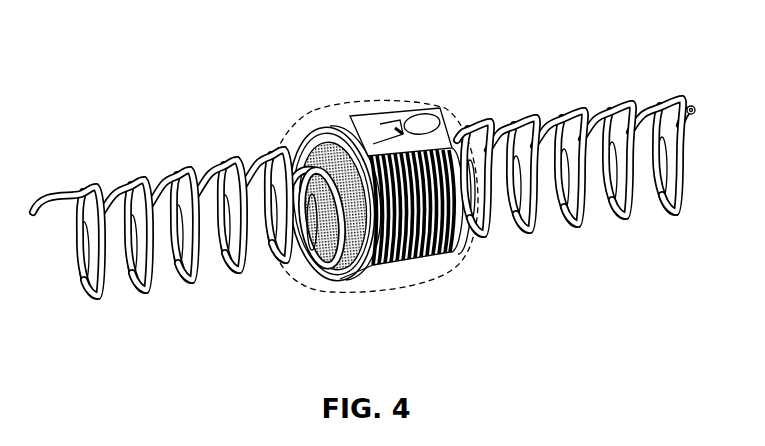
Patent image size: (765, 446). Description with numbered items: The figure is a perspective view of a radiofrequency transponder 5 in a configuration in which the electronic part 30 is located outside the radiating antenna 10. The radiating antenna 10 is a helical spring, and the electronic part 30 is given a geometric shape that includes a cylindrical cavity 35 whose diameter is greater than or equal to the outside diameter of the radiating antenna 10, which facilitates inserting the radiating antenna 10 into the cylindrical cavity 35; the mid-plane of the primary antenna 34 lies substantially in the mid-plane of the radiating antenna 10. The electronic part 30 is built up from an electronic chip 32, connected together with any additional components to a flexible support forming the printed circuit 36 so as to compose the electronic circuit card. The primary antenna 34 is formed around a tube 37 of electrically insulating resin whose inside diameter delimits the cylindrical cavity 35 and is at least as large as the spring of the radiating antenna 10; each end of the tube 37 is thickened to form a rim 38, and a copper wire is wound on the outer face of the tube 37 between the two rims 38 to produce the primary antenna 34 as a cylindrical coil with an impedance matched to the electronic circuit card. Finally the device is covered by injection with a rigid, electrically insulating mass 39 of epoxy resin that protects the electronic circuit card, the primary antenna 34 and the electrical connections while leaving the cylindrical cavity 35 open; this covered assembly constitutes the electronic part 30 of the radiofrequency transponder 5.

The radiofrequency transponder 5 is at (379, 188).
The radiating antenna 10 is at (364, 210).
The electronic part 30 is at (379, 168).
The electronic chip 32 is at (377, 118).
The primary antenna 34 is at (450, 238).
The cylindrical cavity 35 is at (275, 158).
The printed circuit 36 is at (447, 128).
The tube 37 is at (347, 186).
The rim 38 is at (372, 233).
The rigid electrically insulating mass 39 is at (398, 275).